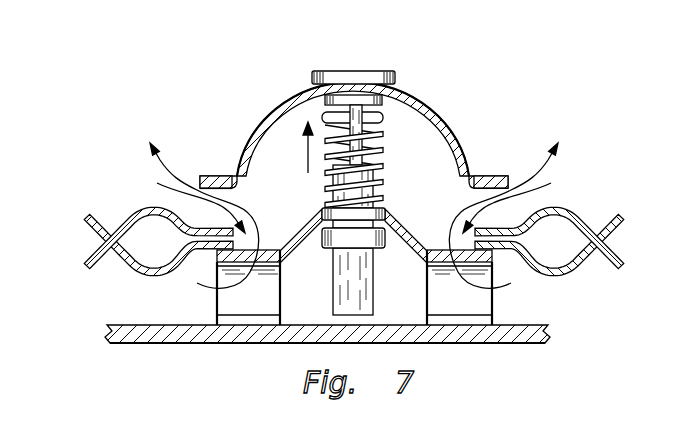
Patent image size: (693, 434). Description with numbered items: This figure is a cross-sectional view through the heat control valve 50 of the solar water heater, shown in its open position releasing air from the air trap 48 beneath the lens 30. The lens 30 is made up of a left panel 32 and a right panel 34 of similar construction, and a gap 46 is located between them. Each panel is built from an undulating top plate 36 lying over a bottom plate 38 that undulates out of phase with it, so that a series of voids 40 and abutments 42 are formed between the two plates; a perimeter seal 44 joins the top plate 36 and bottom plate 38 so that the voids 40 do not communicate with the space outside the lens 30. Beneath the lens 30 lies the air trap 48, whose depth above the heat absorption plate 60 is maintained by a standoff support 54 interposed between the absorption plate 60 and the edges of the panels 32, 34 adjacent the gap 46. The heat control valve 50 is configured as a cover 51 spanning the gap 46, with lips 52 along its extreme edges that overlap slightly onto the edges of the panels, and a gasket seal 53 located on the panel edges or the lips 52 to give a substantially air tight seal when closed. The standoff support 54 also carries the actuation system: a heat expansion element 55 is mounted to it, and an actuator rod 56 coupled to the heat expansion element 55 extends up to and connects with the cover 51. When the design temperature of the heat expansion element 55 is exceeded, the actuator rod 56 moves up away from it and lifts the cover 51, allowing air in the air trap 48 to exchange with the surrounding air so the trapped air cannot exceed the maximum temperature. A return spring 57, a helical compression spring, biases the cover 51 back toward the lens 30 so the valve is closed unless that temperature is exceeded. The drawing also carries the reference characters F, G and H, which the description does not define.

The lens 30 is at (540, 104).
The left panel 32 is at (90, 190).
The right panel 34 is at (600, 170).
The top plate 36 is at (85, 215).
The bottom plate 38 is at (85, 265).
The voids 40 is at (141, 250).
The abutments 42 is at (106, 240).
The perimeter seal 44 is at (493, 252).
The gap 46 is at (416, 202).
The air trap 48 is at (115, 305).
The heat control valve 50 is at (349, 98).
The cover 51 is at (278, 104).
The lips 52 is at (211, 175).
The gasket seal 53 is at (212, 227).
The standoff support 54 is at (268, 288).
The heat expansion element 55 is at (368, 292).
The actuator rod 56 is at (367, 140).
The return spring 57 is at (322, 210).
The heat absorption plate 60 is at (480, 337).
The flow direction F is at (163, 164).
The flow direction G is at (159, 185).
The height direction H is at (306, 152).